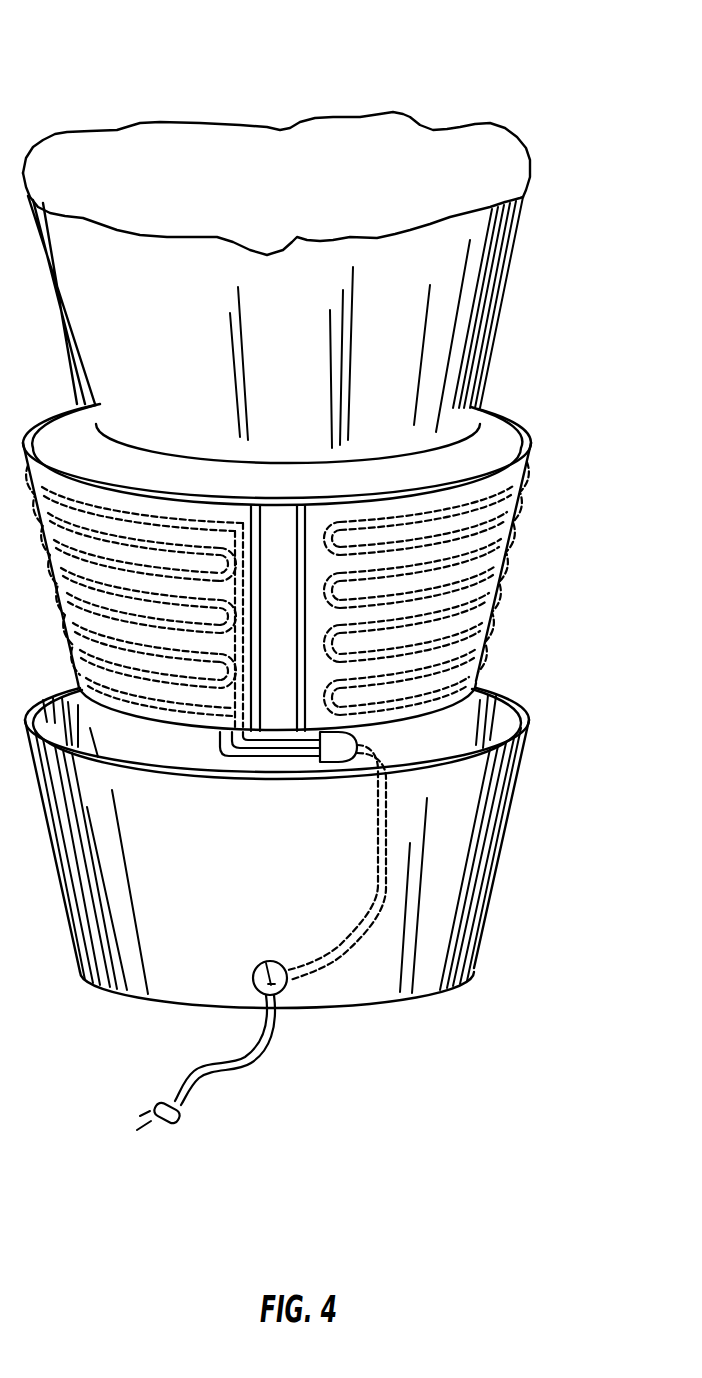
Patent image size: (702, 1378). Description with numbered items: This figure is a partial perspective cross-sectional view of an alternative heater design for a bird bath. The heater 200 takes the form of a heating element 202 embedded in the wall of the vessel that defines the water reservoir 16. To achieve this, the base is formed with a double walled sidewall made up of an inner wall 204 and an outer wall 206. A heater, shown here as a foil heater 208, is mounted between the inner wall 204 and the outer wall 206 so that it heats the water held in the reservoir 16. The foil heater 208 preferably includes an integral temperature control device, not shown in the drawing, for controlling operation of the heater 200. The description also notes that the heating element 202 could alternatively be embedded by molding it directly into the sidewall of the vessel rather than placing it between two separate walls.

The heater 200 is at (480, 46).
The reservoir 16 is at (428, 148).
The inner wall 204 is at (473, 347).
The heating element 202 is at (483, 655).
The foil heater 208 is at (343, 796).
The outer wall 206 is at (480, 843).